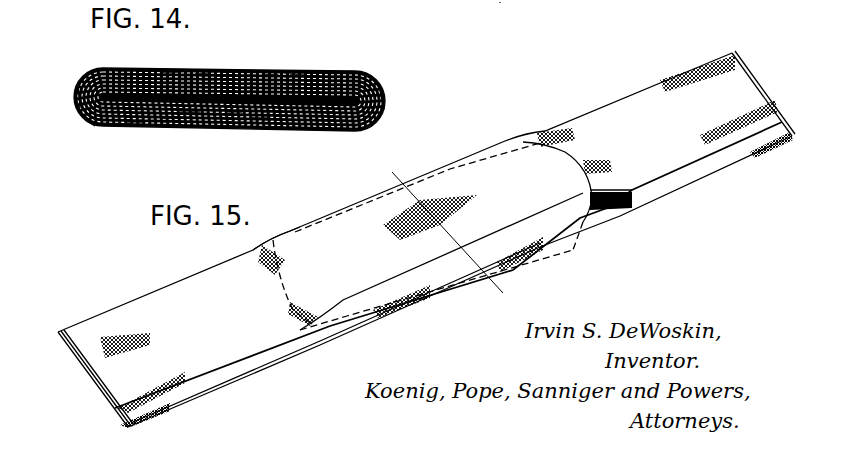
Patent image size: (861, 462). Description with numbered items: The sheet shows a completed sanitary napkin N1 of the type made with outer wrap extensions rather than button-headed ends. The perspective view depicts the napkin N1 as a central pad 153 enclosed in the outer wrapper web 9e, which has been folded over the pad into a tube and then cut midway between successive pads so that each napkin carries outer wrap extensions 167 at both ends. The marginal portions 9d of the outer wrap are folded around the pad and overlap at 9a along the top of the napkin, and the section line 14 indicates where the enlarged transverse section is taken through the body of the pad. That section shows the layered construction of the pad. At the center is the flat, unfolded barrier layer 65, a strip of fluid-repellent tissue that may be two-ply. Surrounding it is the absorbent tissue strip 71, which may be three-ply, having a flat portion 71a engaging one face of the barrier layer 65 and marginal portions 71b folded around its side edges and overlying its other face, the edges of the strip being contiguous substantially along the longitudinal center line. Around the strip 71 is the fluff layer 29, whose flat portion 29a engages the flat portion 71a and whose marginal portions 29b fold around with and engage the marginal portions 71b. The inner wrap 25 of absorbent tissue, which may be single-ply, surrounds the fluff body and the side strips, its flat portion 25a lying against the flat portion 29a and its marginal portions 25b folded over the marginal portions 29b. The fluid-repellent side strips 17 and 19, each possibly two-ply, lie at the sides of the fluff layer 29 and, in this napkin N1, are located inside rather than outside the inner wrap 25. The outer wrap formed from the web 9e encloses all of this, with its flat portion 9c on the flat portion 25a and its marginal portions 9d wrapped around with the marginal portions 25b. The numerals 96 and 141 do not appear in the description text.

In FIG. 14, the napkin N1 is at (100, 66).
In FIG. 15, the napkin N1 is at (250, 252).
In FIG. 15, the overlap of marginal portions of outer wrap 9a is at (522, 225).
In FIG. 14, the flat portion of outer wrap 9c is at (505, 5).
In FIG. 14, the marginal portions of outer wrap 9d is at (132, 68).
In FIG. 15, the marginal portions of outer wrap 9d is at (462, 180).
In FIG. 14, the outer wrapper web 9e is at (80, 82).
In FIG. 15, the outer wrapper web 9e is at (330, 215).
In FIG. 14, the side strip 17 is at (92, 124).
In FIG. 14, the side strip 19 is at (357, 76).
In FIG. 14, the inner wrap 25 is at (217, 127).
In FIG. 14, the flat portion of inner wrap 25a is at (258, 130).
In FIG. 14, the marginal portions of inner wrap 25b is at (220, 71).
In FIG. 14, the fluff layer 29 is at (315, 128).
In FIG. 14, the flat portion of fluff layer 29a is at (167, 127).
In FIG. 14, the marginal portions of fluff layer 29b is at (168, 70).
In FIG. 14, the barrier layer 65 is at (186, 125).
In FIG. 14, the absorbent tissue strip 71 is at (234, 128).
In FIG. 14, the flat portion of absorbent tissue strip 71a is at (281, 129).
In FIG. 14, the marginal portions of absorbent tissue strip 71b is at (200, 70).
In FIG. 14, the inner layer 96 is at (136, 126).
In FIG. 15, the hidden capsule outline 141 is at (277, 287).
In FIG. 15, the pad 153 is at (365, 213).
In FIG. 15, the outer wrap extension 167 is at (183, 294).
In FIG. 15, the section line 14 is at (392, 172).